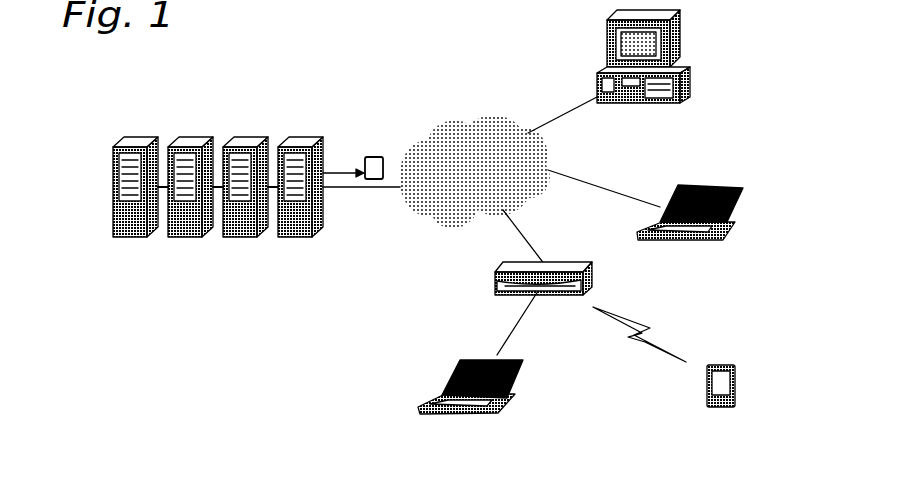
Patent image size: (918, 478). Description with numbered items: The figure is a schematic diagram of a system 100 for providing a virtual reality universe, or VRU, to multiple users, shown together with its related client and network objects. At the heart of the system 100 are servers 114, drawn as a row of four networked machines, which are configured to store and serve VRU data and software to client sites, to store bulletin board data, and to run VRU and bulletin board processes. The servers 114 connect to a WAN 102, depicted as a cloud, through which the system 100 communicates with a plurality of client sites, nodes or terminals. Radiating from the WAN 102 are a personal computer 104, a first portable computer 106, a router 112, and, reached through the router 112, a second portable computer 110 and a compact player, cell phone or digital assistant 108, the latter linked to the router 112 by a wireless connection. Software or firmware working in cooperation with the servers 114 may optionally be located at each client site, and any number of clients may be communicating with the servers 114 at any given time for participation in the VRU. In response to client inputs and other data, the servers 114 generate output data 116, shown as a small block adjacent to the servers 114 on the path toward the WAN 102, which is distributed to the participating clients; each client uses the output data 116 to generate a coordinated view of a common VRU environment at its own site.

The system 100 is at (365, 95).
The WAN 102 is at (430, 213).
The personal computer 104 is at (680, 43).
The portable computer 106 is at (733, 210).
The compact player, cell phone or digital assistant 108 is at (737, 390).
The portable computer 110 is at (495, 410).
The router 112 is at (595, 273).
The servers 114 is at (136, 243).
The output data 116 is at (375, 157).